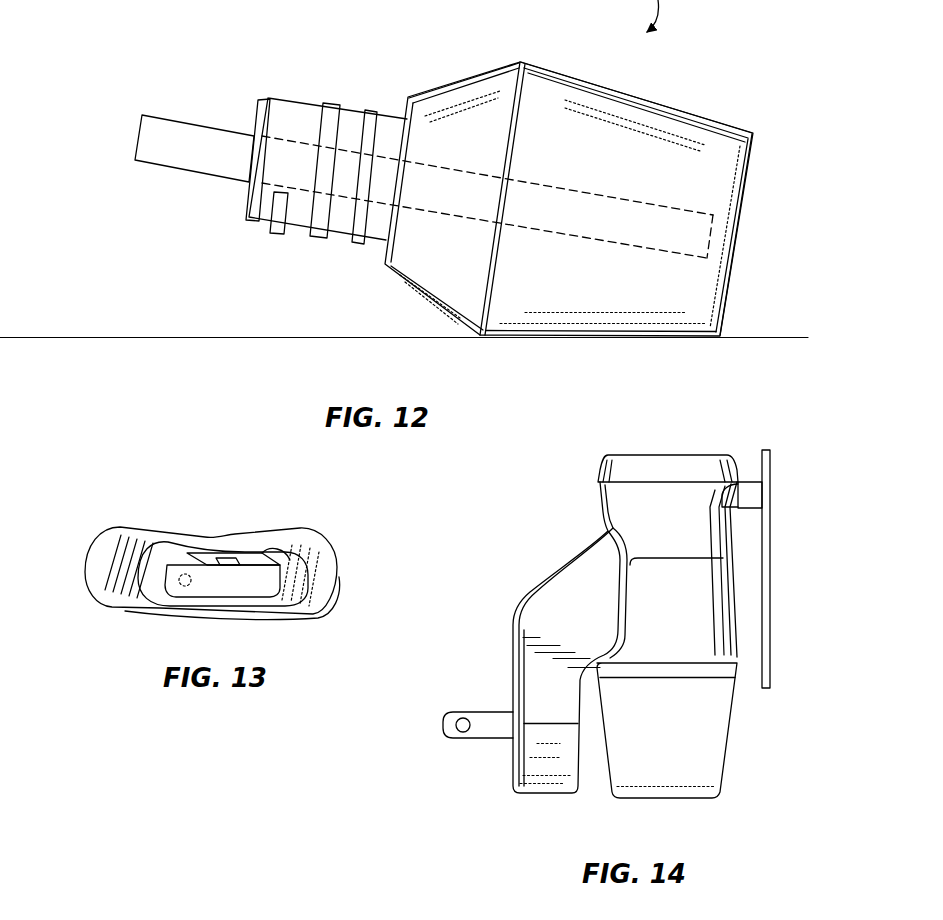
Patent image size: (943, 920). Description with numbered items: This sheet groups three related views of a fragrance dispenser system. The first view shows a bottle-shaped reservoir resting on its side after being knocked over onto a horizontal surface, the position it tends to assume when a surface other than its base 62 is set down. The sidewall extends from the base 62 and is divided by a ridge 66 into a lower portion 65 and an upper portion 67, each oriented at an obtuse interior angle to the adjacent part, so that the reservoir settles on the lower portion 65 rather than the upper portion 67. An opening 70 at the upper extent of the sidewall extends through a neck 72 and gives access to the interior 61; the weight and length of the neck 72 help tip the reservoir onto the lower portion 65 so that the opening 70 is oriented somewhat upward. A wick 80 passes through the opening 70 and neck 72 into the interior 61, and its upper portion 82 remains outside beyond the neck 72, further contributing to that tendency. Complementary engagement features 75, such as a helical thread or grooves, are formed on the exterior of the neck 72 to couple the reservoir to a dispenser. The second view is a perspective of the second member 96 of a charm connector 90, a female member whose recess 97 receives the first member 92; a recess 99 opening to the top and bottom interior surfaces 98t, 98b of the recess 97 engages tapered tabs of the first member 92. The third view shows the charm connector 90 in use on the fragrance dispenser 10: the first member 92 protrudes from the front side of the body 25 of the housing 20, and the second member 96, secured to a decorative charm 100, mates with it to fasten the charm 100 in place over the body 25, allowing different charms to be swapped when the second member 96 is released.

In FIG. 14, the fragrance dispenser 10 is at (545, 456).
In FIG. 14, the housing 20 is at (570, 528).
In FIG. 14, the body 25 is at (698, 617).
In FIG. 12, the interior 61 is at (684, 133).
In FIG. 12, the base 62 is at (749, 186).
In FIG. 12, the lower portion 65 is at (643, 100).
In FIG. 12, the ridge 66 is at (520, 90).
In FIG. 12, the upper portion 67 is at (478, 76).
In FIG. 12, the opening 70 is at (479, 178).
In FIG. 12, the neck 72 is at (333, 94).
In FIG. 12, the complementary engagement features 75 is at (371, 112).
In FIG. 12, the wick 80 is at (303, 196).
In FIG. 12, the upper portion of the wick 82 is at (188, 162).
In FIG. 14, the charm connector 90 is at (705, 441).
In FIG. 14, the first member 92 is at (740, 410).
In FIG. 13, the second member 96 is at (88, 497).
In FIG. 14, the second member 96 is at (752, 492).
In FIG. 13, the recess 97 is at (152, 560).
In FIG. 13, the top interior surface 98t is at (268, 552).
In FIG. 13, the bottom interior surface 98b is at (238, 598).
In FIG. 13, the recess 99 is at (233, 552).
In FIG. 14, the decorative charm 100 is at (771, 492).